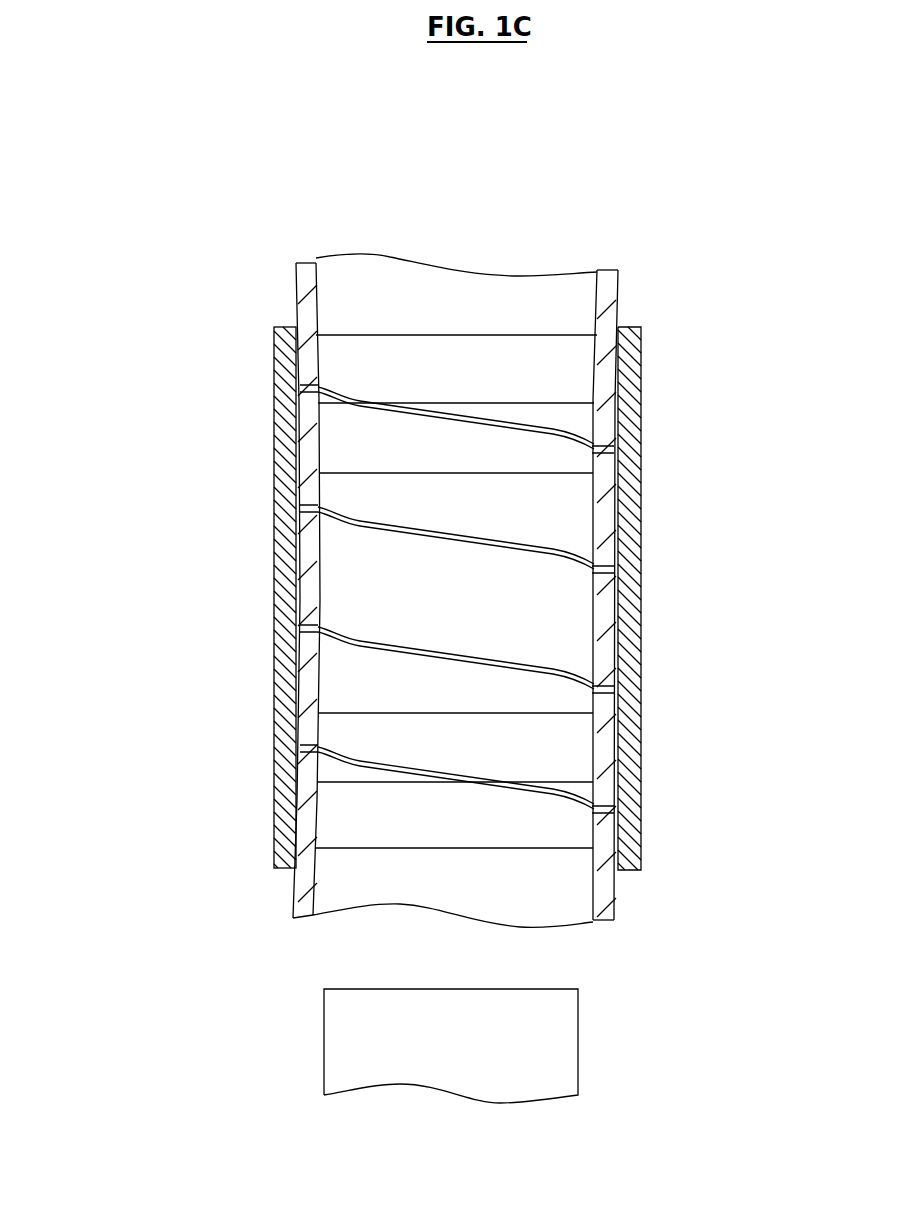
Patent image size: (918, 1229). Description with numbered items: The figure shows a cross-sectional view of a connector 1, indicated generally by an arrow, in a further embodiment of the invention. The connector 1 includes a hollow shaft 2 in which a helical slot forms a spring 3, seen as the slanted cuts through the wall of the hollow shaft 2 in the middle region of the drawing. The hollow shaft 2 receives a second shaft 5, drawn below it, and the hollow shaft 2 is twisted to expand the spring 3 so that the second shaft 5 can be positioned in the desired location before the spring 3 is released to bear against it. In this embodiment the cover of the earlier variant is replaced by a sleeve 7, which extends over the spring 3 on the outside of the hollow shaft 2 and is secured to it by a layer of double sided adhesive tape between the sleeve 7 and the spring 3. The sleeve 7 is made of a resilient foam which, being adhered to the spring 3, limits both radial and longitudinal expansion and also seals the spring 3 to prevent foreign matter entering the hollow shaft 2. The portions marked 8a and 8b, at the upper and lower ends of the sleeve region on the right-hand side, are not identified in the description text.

The connector 1 is at (140, 152).
The hollow shaft 2 is at (317, 283).
The spring 3 is at (655, 402).
The second shaft 5 is at (324, 1037).
The sleeve 7 is at (273, 653).
The upper end of bearing strip 8a is at (626, 314).
The lower end of bearing strip 8b is at (626, 886).